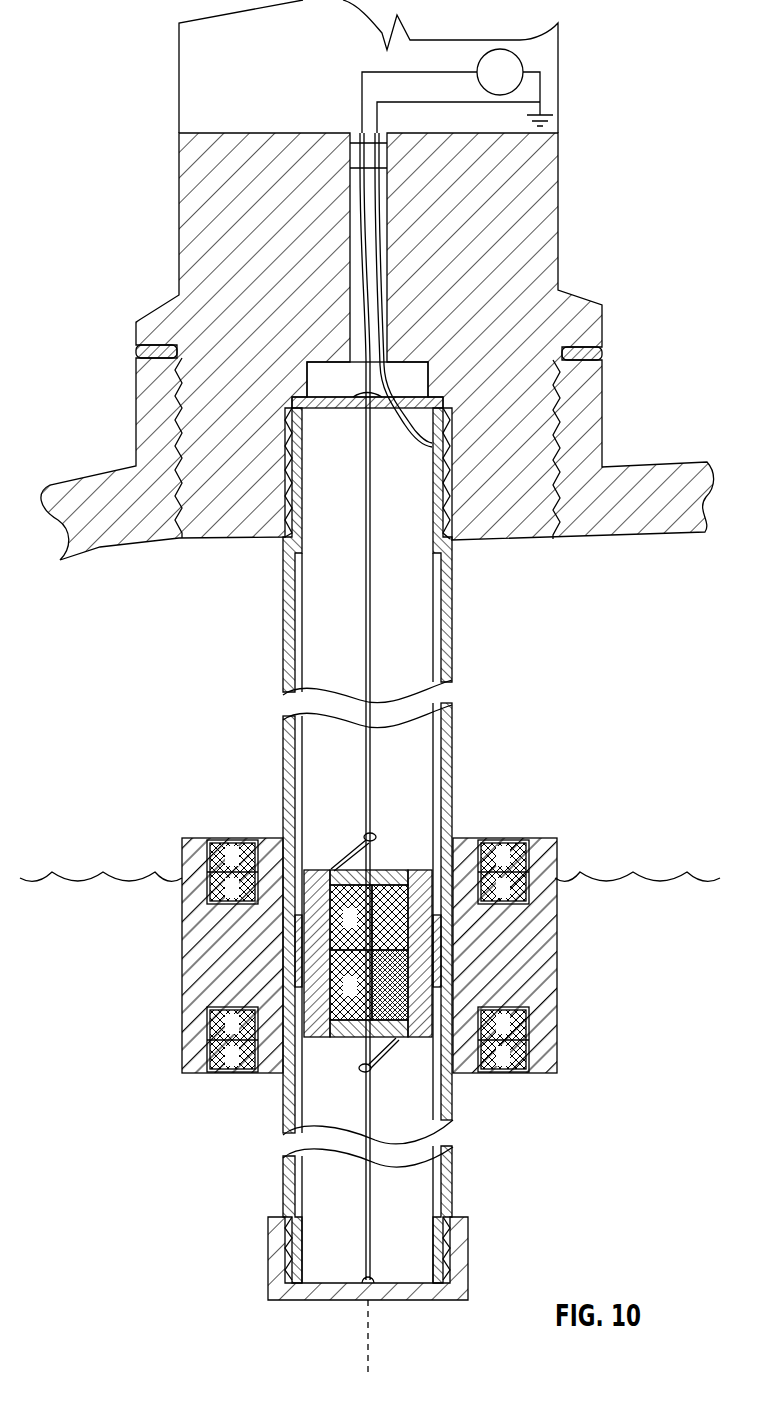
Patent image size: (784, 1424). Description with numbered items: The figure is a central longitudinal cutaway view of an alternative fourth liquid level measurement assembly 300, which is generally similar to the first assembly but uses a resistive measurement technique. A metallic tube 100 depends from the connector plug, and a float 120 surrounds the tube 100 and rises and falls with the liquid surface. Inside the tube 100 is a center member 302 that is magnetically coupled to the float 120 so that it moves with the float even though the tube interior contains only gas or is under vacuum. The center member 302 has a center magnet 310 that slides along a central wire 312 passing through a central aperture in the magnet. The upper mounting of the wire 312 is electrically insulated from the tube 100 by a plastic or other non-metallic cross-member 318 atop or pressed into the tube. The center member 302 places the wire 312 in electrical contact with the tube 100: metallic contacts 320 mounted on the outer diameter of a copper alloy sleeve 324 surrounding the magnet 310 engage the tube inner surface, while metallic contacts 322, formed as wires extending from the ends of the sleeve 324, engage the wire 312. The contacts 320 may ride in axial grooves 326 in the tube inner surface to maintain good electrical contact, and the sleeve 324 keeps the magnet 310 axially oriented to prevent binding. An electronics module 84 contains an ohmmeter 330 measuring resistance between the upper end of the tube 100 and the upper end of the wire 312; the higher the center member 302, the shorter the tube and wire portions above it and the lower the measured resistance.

The electronics module 84 is at (304, 93).
The ohmmeter 330 is at (537, 54).
The cross-member 318 is at (413, 388).
The axial grooves 326 is at (300, 634).
The tube 100 is at (452, 665).
The fourth liquid level measurement assembly 300 is at (520, 776).
The float 120 is at (597, 1006).
The center member 302 is at (373, 995).
The metallic contacts 320 is at (418, 967).
The sleeve 324 is at (382, 1009).
The metallic contacts 322 is at (357, 838).
The center magnet 310 is at (383, 1080).
The central wire 312 is at (367, 1105).